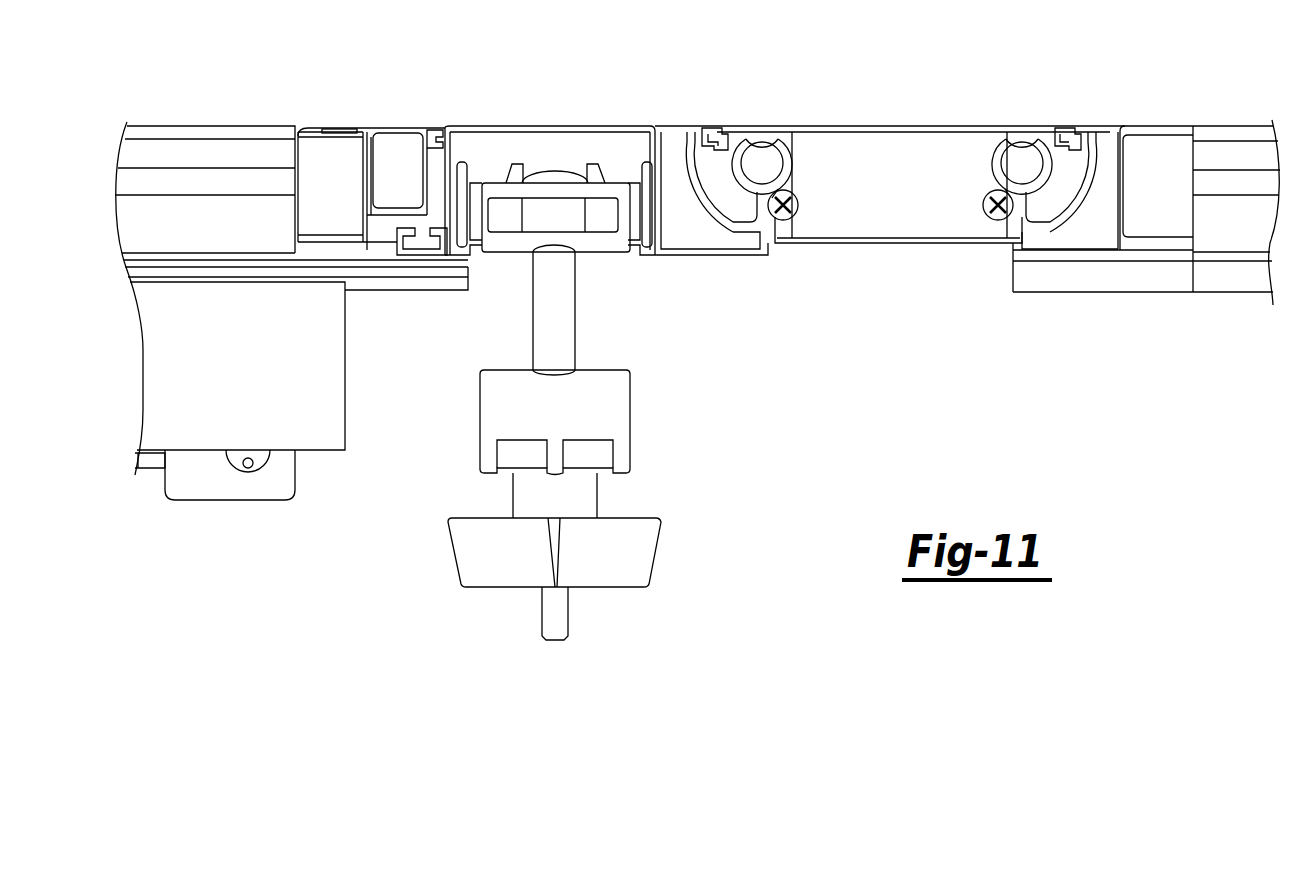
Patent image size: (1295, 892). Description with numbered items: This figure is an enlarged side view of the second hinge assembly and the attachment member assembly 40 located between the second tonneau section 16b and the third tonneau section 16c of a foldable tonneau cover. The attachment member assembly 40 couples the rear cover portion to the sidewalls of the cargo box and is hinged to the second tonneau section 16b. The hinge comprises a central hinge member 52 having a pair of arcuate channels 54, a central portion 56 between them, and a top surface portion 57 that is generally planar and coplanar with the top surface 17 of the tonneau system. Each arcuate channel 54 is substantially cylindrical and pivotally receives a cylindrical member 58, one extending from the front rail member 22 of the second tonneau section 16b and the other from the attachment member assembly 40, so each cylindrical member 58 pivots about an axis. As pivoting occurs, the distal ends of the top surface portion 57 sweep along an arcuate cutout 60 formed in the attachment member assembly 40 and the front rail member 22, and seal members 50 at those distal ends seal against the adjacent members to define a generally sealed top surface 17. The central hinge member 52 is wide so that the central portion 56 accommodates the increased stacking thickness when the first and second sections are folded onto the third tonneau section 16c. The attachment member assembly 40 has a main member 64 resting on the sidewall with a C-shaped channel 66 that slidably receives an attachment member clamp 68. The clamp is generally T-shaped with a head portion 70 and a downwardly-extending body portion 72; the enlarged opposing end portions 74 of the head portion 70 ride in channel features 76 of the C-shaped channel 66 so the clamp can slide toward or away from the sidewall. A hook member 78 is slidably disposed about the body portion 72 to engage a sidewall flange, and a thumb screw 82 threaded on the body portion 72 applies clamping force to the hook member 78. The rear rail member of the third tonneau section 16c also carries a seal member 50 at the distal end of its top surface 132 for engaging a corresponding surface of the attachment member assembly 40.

The third tonneau section 16c is at (170, 125).
The second tonneau section 16b is at (1240, 126).
The top surface 17 is at (1213, 127).
The front rail member 22 is at (1088, 128).
The attachment member assembly 40 is at (587, 108).
The seal member 50 is at (428, 143).
The central hinge member 52 is at (817, 108).
The arcuate channel 54 is at (755, 138).
The central portion 56 is at (905, 245).
The top surface portion 57 is at (870, 125).
The cylindrical member 58 is at (792, 162).
The arcuate cutout 60 is at (730, 212).
The main member 64 is at (523, 125).
The C-shaped channel 66 is at (636, 140).
The attachment member clamp 68 is at (559, 505).
The head portion 70 is at (544, 190).
The body portion 72 is at (545, 310).
The end portion 74 is at (462, 160).
The channel feature 76 is at (463, 250).
The hook member 78 is at (620, 425).
The thumb screw 82 is at (657, 543).
The top surface 132 is at (330, 127).